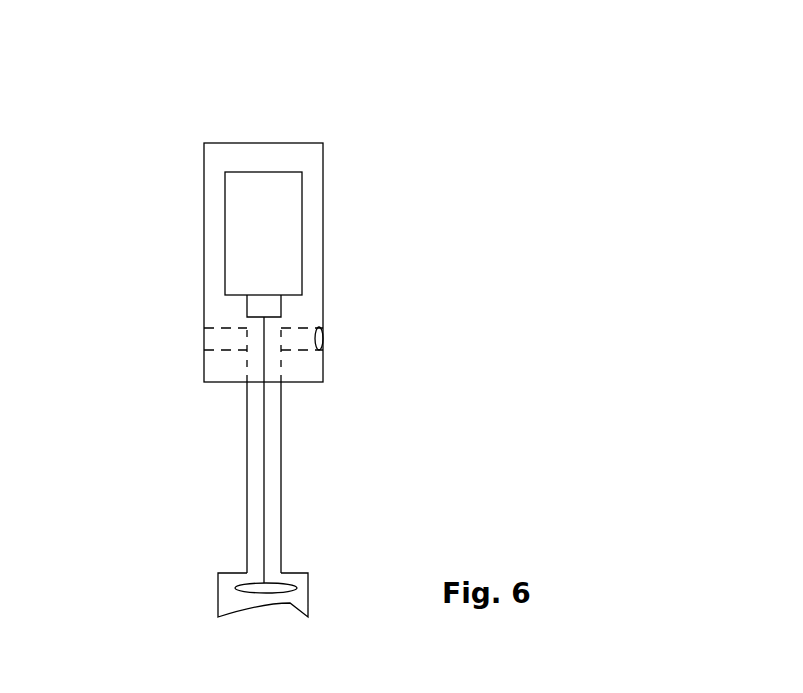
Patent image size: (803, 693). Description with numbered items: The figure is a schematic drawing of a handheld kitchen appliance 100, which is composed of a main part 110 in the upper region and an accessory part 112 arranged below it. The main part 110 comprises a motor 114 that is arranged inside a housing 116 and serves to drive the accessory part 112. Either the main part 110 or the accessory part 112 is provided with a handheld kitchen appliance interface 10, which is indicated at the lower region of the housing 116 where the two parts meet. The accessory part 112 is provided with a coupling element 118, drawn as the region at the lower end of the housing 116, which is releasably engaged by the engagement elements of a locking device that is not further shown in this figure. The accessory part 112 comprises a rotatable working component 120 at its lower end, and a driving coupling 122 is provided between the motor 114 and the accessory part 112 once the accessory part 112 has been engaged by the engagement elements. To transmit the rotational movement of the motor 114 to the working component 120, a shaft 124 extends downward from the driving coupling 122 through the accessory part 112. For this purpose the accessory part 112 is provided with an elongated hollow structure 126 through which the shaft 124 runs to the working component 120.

The handheld kitchen appliance 100 is at (376, 94).
The main part 110 is at (176, 171).
The accessory part 112 is at (226, 417).
The motor 114 is at (258, 172).
The housing 116 is at (323, 183).
The coupling element 118 is at (243, 338).
The rotatable working component 120 is at (246, 583).
The driving coupling 122 is at (281, 304).
The shaft 124 is at (262, 503).
The elongated hollow structure 126 is at (281, 470).
The handheld kitchen appliance interface 10 is at (336, 338).